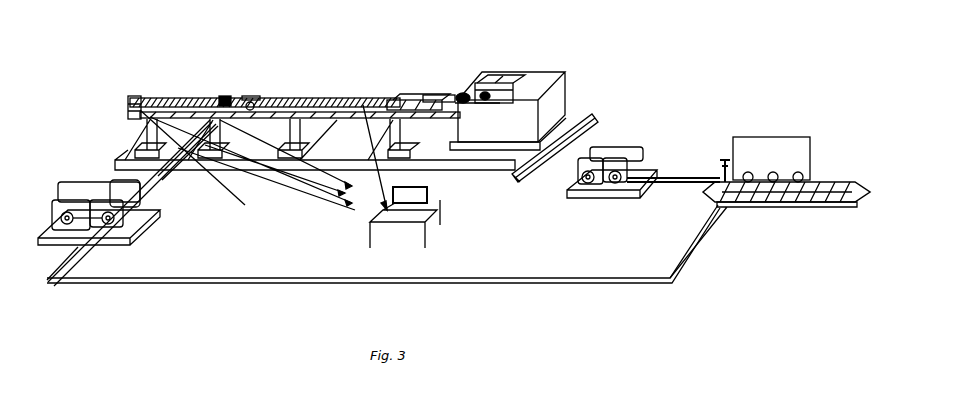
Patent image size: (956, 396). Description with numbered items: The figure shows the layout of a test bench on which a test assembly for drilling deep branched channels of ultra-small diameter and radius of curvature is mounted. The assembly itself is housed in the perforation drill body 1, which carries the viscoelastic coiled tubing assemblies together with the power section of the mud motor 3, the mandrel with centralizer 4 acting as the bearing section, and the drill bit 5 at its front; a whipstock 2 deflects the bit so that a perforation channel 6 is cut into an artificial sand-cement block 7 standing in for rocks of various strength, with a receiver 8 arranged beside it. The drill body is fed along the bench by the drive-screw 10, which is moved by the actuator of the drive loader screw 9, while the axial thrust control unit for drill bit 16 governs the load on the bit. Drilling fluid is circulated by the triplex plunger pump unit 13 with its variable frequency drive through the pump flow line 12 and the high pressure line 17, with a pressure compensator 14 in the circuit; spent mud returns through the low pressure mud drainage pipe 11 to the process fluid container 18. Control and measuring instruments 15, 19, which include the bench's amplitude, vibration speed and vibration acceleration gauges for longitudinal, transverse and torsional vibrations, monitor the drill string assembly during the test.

The perforation drill body 1 is at (340, 98).
The whipstock 2 is at (384, 101).
The power section of the mud motor 3 is at (421, 98).
The mandrel with centralizer 4 is at (452, 96).
The drill bit 5 is at (468, 86).
The perforation channel 6 is at (492, 82).
The artificial sand-cement block 7 is at (560, 100).
The receiver 8 is at (573, 118).
The actuator of the drive loader screw 9 is at (140, 97).
The drive-screw 10 is at (190, 96).
The low pressure mud drainage pipe 11 is at (177, 281).
The pump flow line 12 is at (160, 187).
The triplex plunger pump unit 13 is at (78, 177).
The pressure compensator 14 is at (62, 178).
The control and measuring instruments 15 is at (222, 94).
The axial thrust control unit for drill bit 16 is at (250, 100).
The high pressure line 17 is at (206, 167).
The process fluid container 18 is at (760, 135).
The control and measuring instruments 19 is at (298, 100).